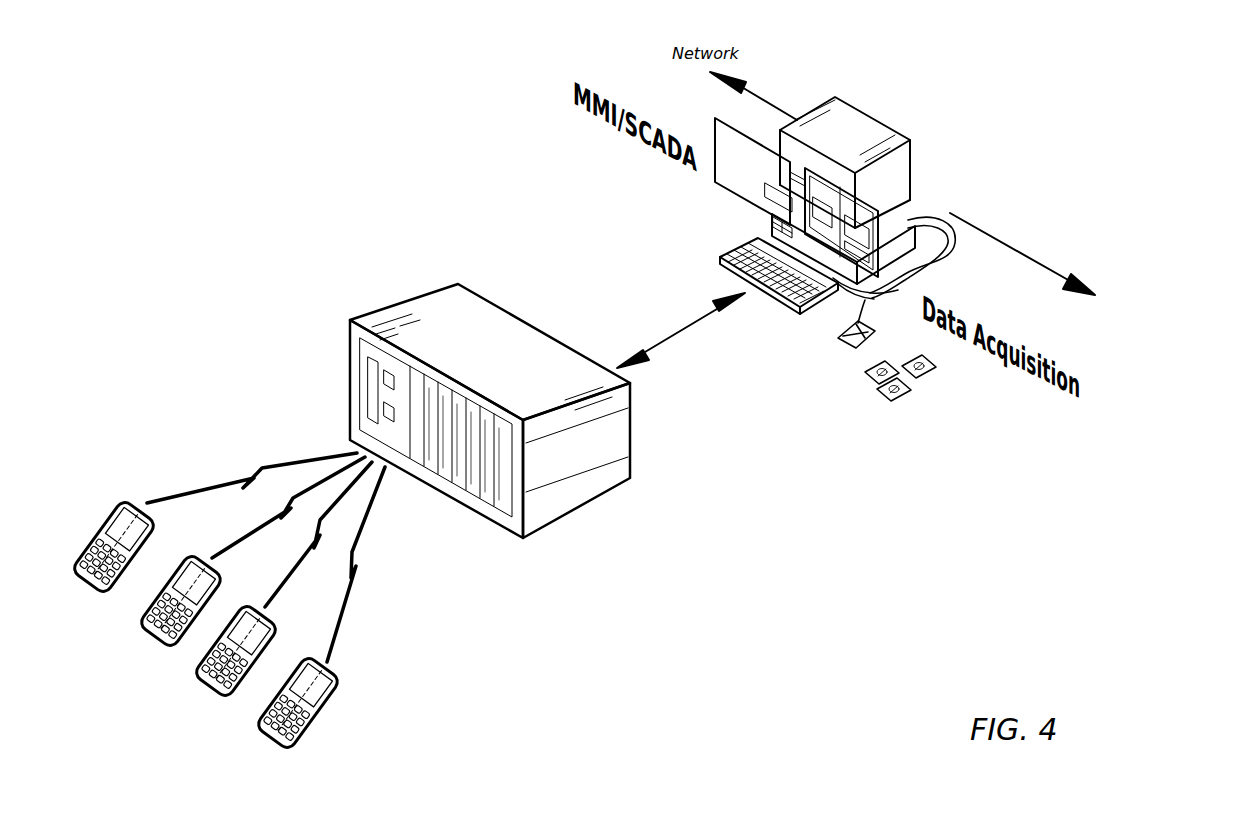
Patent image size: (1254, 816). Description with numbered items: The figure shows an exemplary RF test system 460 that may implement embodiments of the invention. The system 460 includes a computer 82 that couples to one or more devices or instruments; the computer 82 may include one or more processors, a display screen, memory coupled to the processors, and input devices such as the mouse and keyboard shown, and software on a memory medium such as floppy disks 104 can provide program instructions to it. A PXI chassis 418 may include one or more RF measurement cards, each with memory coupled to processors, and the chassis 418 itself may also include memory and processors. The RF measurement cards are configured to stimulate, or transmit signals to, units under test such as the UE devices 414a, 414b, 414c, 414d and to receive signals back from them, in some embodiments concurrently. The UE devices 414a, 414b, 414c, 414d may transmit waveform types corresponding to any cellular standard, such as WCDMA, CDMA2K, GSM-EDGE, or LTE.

The PXI chassis 418 is at (463, 300).
The UE device 414a is at (126, 502).
The UE device 414b is at (194, 557).
The UE device 414c is at (250, 607).
The UE device 414d is at (360, 668).
The computer 82 is at (867, 123).
The floppy disks 104 is at (906, 397).
The RF test system 460 is at (1196, 136).